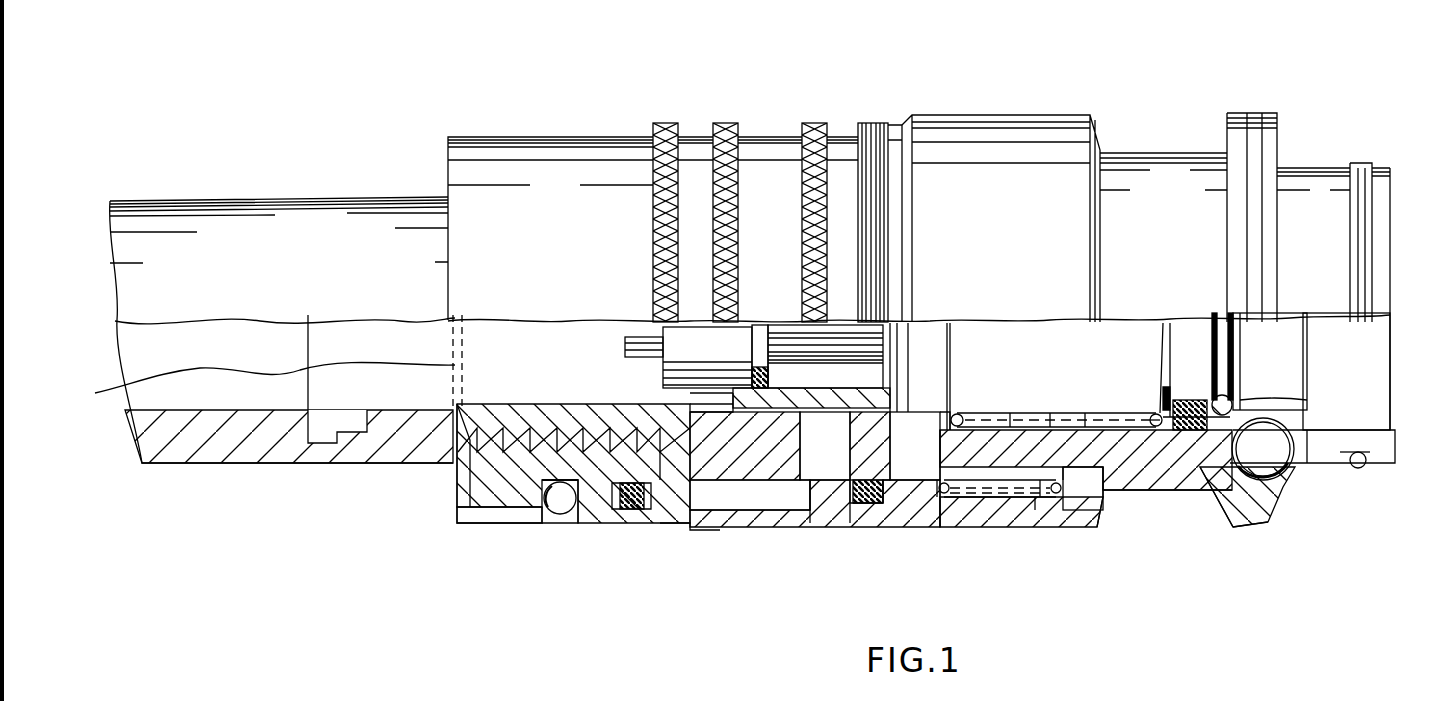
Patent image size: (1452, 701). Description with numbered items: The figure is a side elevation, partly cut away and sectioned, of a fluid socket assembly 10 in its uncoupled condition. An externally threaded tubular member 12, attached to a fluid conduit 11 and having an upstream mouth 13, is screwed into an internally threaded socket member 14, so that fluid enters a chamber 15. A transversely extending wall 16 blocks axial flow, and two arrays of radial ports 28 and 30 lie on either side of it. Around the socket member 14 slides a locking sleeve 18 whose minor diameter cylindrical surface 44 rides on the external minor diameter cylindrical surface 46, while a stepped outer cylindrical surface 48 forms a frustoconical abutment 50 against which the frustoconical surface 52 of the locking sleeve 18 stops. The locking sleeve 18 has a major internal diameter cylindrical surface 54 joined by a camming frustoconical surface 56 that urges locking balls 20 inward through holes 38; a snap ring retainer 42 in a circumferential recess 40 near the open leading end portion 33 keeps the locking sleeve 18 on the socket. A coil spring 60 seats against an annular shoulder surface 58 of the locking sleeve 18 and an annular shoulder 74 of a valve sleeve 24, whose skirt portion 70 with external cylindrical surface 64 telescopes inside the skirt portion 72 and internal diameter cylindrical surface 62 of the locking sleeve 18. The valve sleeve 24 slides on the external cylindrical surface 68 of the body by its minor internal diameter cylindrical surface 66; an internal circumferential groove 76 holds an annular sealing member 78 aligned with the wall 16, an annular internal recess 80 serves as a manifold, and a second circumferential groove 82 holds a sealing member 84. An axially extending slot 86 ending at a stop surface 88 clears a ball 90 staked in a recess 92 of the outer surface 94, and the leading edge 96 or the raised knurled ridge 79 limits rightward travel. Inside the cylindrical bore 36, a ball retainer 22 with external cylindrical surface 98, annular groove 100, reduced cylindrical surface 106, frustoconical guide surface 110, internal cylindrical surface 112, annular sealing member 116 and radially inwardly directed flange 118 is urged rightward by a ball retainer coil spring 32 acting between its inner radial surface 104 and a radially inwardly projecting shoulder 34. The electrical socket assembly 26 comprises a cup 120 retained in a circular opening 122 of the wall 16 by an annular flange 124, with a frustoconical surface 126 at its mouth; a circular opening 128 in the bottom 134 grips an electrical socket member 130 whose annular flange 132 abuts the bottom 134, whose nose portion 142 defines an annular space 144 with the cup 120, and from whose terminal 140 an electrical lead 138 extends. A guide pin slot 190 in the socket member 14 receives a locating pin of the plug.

The socket assembly 10 is at (416, 142).
The fluid conduit 11 is at (222, 450).
The externally threaded tubular member 12 is at (450, 468).
The upstream mouth 13 is at (368, 400).
The internally threaded socket member 14 is at (495, 522).
The chamber 15 is at (555, 380).
The transversely extending wall 16 is at (884, 432).
The locking sleeve 18 is at (1140, 486).
The locking balls 20 is at (1290, 463).
The ball retainer 22 is at (1322, 383).
The valve sleeve 24 is at (755, 514).
The electrical socket assembly 26 is at (826, 416).
The ports 28 is at (795, 515).
The ports 30 is at (938, 515).
The ball retainer coil spring 32 is at (966, 418).
The open leading end portion 33 is at (1388, 314).
The radially inwardly projecting shoulder 34 is at (946, 415).
The cylindrical bore 36 is at (1126, 430).
The holes 38 is at (1298, 430).
The circumferential recess 40 is at (1385, 450).
The snap ring retainer 42 is at (1356, 168).
The minor diameter cylindrical surface 44 is at (1215, 498).
The external minor diameter cylindrical surface 46 is at (1086, 462).
The stepped outer cylindrical surface 48 is at (1012, 475).
The frustoconical abutment 50 is at (1050, 475).
The frustoconical surface 52 is at (1100, 500).
The major internal diameter cylindrical surface 54 is at (1280, 480).
The frustoconical surface 56 is at (1240, 520).
The annular shoulder surface 58 is at (1067, 476).
The coil spring 60 is at (1042, 487).
The internal diameter cylindrical surface 62 is at (1005, 510).
The external cylindrical surface 64 is at (990, 480).
The minor internal diameter cylindrical surface 66 is at (680, 512).
The external cylindrical surface 68 is at (662, 486).
The skirt portion 70 is at (1036, 500).
The skirt portion 72 is at (968, 520).
The annular shoulder 74 is at (930, 486).
The internal circumferential groove 76 is at (892, 512).
The annular sealing member 78 is at (846, 506).
The raised knurled ridge 79 is at (868, 530).
The annular internal recess 80 is at (720, 530).
The second circumferential groove 82 is at (636, 520).
The sealing member 84 is at (606, 512).
The axially extending slot 86 is at (466, 512).
The stop surface 88 is at (568, 520).
The ball 90 is at (552, 512).
The recess 92 is at (556, 482).
The outer surface 94 is at (516, 478).
The leading edge 96 is at (1060, 478).
The external cylindrical surface 98 is at (1178, 410).
The annular groove 100 is at (1165, 398).
The inner radial surface 104 is at (1158, 420).
The reduced cylindrical surface 106 is at (1280, 400).
The frustoconical guide surface 110 is at (1298, 350).
The internal cylindrical surface 112 is at (1280, 405).
The annular sealing member 116 is at (1210, 355).
The radially inwardly directed flange 118 is at (1210, 386).
The cup 120 is at (836, 400).
The circular opening 122 is at (898, 395).
The annular flange 124 is at (912, 416).
The frustoconical surface 126 is at (905, 330).
The circular opening 128 is at (722, 383).
The electrical socket member 130 is at (745, 318).
The annular flange 132 is at (760, 322).
The bottom 134 is at (788, 400).
The electrical lead 138 is at (427, 365).
The terminal 140 is at (650, 357).
The nose portion 142 is at (895, 330).
The annular space 144 is at (790, 395).
The guide pin slot 190 is at (1342, 455).